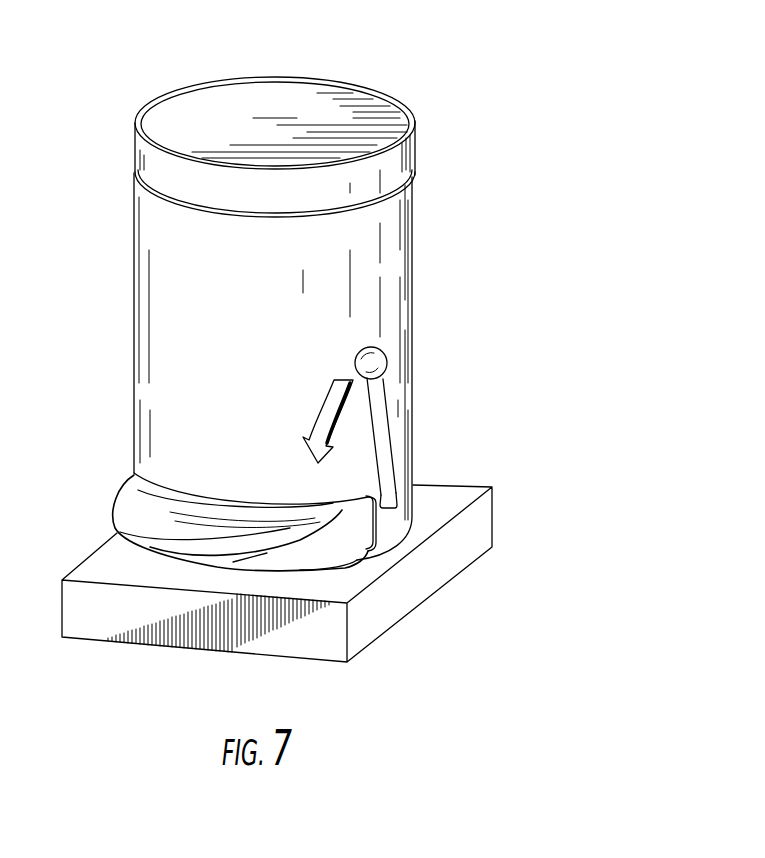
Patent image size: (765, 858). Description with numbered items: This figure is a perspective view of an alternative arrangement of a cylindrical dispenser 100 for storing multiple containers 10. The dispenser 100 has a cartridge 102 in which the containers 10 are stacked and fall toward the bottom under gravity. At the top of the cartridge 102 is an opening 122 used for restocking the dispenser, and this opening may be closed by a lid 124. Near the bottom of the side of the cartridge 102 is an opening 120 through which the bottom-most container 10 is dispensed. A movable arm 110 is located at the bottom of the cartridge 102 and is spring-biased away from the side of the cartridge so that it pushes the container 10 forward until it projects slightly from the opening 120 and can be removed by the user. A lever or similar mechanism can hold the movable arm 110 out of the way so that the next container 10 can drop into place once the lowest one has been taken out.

The dispenser 100 is at (497, 233).
The cartridge 102 is at (145, 328).
The movable arm 110 is at (385, 403).
The opening 120 is at (355, 560).
The opening 122 is at (410, 177).
The lid 124 is at (352, 110).
The container 10 is at (217, 567).